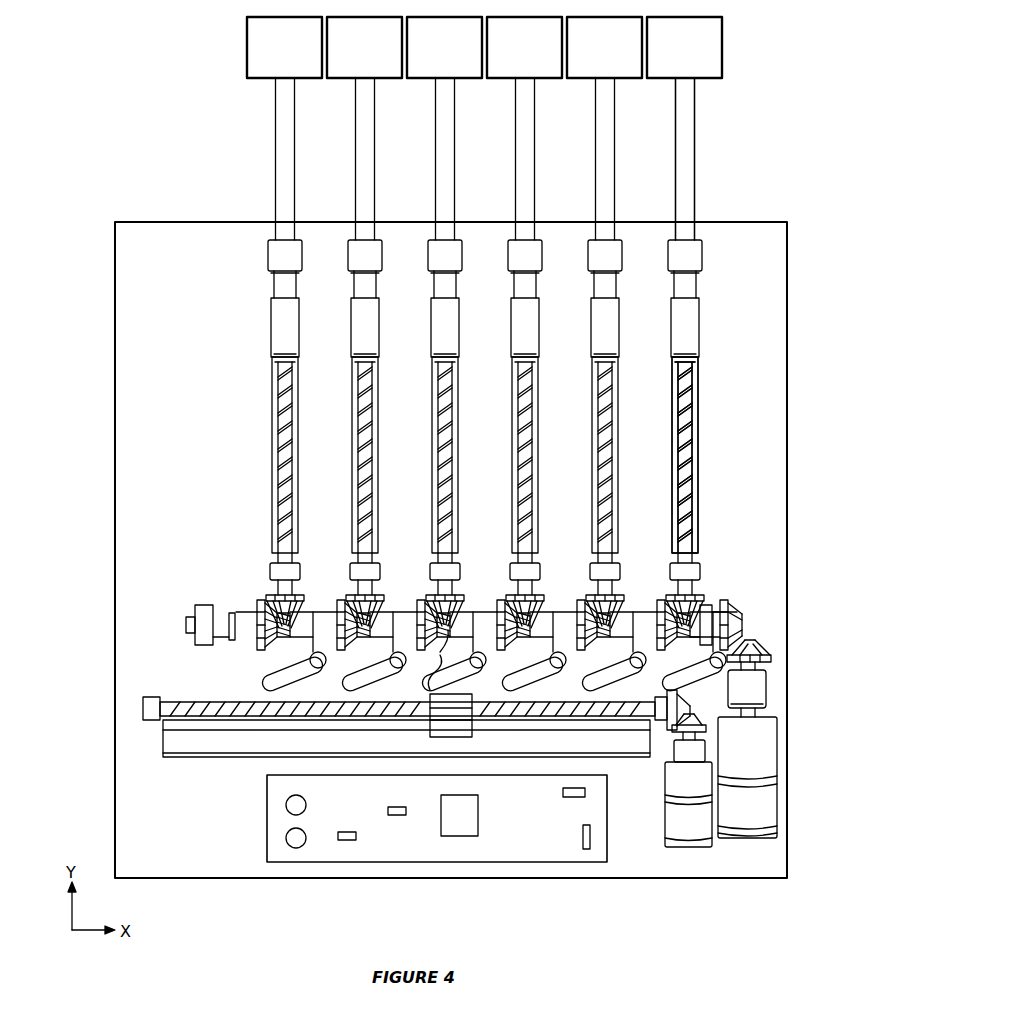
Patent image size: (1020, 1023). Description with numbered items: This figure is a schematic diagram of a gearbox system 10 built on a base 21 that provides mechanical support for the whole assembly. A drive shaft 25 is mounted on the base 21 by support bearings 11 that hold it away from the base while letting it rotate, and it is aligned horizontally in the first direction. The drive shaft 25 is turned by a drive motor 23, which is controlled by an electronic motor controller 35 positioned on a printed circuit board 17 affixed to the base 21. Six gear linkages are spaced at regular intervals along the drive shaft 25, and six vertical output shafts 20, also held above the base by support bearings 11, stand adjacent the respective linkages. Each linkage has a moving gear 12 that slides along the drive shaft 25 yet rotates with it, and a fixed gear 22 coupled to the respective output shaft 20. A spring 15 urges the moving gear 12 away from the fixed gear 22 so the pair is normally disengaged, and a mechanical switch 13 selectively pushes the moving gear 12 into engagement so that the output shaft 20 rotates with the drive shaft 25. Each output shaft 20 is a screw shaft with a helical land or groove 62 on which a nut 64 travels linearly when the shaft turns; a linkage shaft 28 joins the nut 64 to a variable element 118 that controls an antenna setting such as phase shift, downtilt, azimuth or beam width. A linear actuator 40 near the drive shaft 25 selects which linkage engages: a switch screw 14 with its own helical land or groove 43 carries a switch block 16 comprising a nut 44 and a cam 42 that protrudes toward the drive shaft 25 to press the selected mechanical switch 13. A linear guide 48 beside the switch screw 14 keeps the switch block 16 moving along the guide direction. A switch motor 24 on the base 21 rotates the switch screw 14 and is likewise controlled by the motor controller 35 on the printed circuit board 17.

The gearbox system 10 is at (97, 232).
The base 21 is at (172, 271).
The variable element 118 is at (300, 57).
The linkage shaft 28 is at (688, 162).
The support bearings 11 is at (690, 254).
The nut 64 is at (688, 332).
The output shafts 20 is at (688, 420).
The helical land or groove 62 is at (690, 478).
The fixed gear 22 is at (295, 590).
The moving gear 12 is at (258, 608).
The spring 15 is at (300, 622).
The mechanical switch 13 is at (233, 626).
The drive shaft 25 is at (188, 625).
The helical land or groove 43 is at (188, 698).
The switch screw 14 is at (170, 708).
The linear guide 48 is at (186, 742).
The switch block 16 is at (438, 740).
The cam 42 is at (444, 650).
The nut 44 is at (462, 695).
The drive motor 23 is at (768, 752).
The switch motor 24 is at (668, 830).
The linear actuator 40 is at (638, 748).
The printed circuit board 17 is at (536, 862).
The motor controller 35 is at (470, 818).